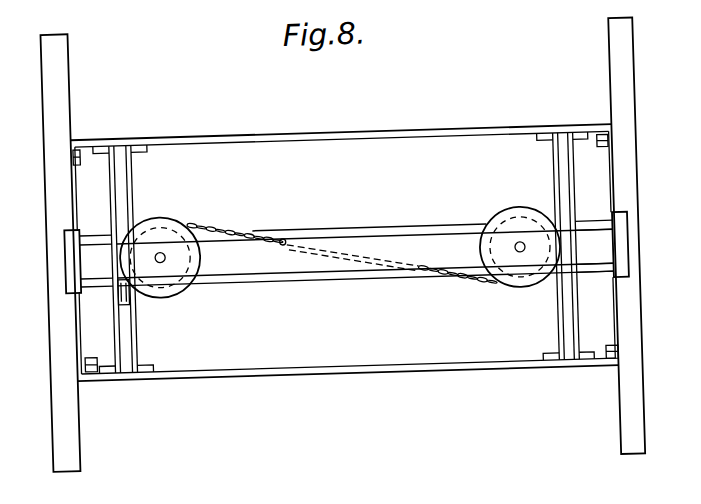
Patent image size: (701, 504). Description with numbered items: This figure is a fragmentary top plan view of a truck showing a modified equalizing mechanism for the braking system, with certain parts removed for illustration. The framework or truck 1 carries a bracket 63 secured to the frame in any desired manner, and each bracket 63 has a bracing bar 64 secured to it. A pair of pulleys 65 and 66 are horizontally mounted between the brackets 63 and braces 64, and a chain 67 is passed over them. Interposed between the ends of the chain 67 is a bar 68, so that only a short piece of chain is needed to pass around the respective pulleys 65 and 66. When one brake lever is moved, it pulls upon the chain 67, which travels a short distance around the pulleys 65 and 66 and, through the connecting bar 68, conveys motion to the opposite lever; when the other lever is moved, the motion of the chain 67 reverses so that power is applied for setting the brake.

The framework or truck 1 is at (62, 430).
The bracket 63 is at (418, 229).
The bracing bar 64 is at (348, 234).
The pulley 65 is at (169, 291).
The pulley 66 is at (529, 295).
The chain 67 is at (452, 283).
The bar 68 is at (372, 273).